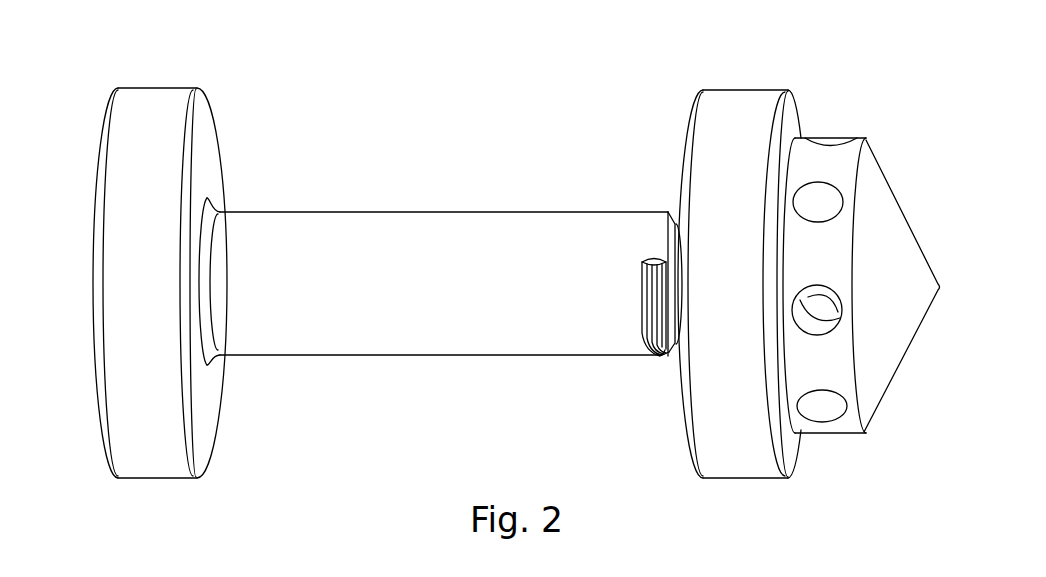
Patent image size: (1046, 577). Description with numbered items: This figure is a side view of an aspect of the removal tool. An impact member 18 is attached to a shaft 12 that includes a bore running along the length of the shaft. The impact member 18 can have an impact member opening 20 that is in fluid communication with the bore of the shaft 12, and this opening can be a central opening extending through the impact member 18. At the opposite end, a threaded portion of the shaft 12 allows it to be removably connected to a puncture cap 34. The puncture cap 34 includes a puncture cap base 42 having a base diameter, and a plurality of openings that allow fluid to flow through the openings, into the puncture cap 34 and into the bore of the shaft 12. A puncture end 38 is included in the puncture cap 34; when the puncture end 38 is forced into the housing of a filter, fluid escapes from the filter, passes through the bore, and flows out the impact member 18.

The shaft 12 is at (473, 242).
The impact member 18 is at (127, 190).
The impact member opening 20 is at (853, 165).
The puncture cap 34 is at (804, 72).
The puncture end 38 is at (942, 289).
The puncture cap base 42 is at (718, 142).